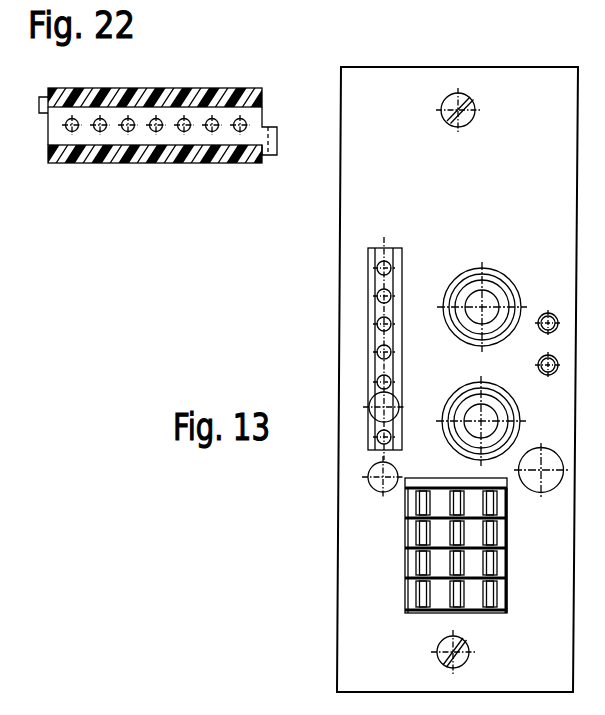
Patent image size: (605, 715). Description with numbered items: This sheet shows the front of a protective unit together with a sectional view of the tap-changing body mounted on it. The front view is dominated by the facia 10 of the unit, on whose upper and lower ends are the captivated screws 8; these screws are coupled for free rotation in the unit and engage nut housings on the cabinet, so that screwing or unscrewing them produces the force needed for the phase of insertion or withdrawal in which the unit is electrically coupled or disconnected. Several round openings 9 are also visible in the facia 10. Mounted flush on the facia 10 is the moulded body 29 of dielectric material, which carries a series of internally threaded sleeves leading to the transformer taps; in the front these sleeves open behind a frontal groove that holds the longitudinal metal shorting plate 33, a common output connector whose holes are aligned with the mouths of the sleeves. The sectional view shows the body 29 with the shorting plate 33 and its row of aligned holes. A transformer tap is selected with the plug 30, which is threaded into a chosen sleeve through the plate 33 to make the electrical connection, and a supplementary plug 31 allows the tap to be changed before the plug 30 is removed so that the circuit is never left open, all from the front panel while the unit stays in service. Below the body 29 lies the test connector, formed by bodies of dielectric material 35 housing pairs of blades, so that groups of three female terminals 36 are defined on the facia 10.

In FIG. 13, the captivated screws 8 is at (468, 103).
In FIG. 13, the openings in mounting plate 9 is at (530, 473).
In FIG. 13, the facia 10 is at (382, 87).
In FIG. 22, the moulded body 29 is at (155, 90).
In FIG. 13, the moulded body 29 is at (368, 277).
In FIG. 13, the plug 30 is at (378, 412).
In FIG. 13, the supplementary plug 31 is at (380, 473).
In FIG. 22, the metal shorting plate 33 is at (135, 138).
In FIG. 13, the bodies of dielectric material 35 is at (437, 525).
In FIG. 13, the female terminals 36 is at (453, 598).